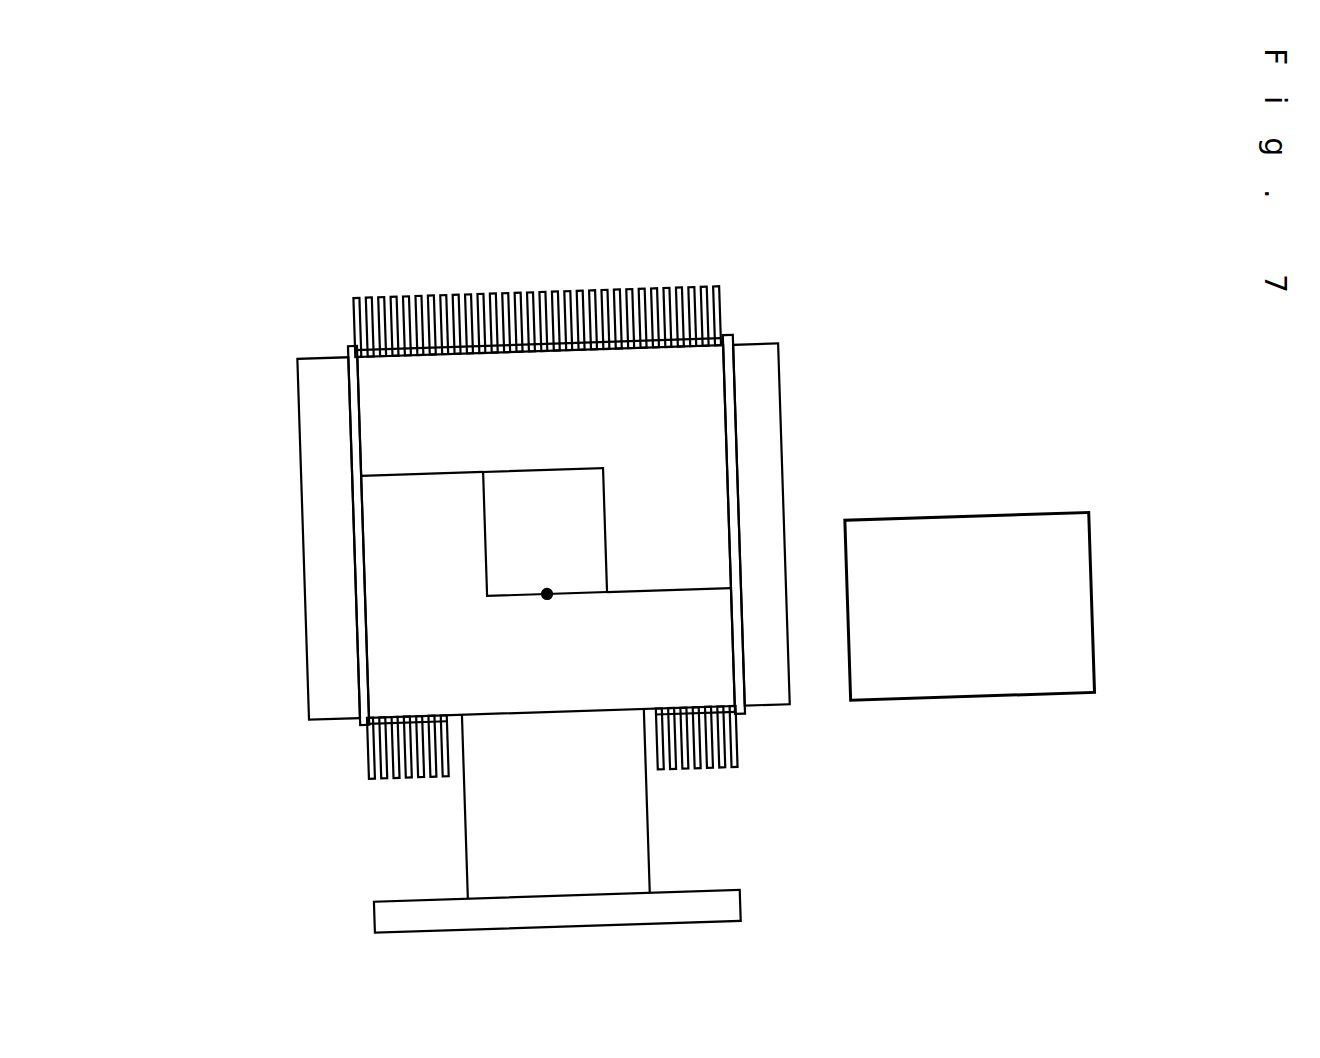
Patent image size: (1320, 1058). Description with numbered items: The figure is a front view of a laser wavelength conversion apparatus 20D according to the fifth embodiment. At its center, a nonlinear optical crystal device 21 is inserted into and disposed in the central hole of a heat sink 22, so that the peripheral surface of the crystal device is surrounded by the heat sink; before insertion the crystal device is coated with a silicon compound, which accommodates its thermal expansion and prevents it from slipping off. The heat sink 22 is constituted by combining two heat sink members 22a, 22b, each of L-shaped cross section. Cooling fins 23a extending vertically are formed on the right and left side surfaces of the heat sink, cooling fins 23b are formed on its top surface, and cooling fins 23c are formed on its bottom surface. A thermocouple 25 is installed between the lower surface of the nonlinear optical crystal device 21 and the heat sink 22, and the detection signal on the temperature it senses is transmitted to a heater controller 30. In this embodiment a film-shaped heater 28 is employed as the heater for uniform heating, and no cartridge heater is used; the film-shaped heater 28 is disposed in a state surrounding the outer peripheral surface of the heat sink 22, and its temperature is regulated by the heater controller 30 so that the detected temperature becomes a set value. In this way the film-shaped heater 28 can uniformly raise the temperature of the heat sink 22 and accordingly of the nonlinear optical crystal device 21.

The laser wavelength conversion apparatus 20D is at (615, 246).
The nonlinear optical crystal device 21 is at (567, 507).
The heat sink 22 is at (672, 373).
The heat sink member 22a is at (705, 417).
The heat sink member 22b is at (402, 612).
The cooling fins 23a is at (335, 473).
The cooling fins 23b is at (727, 296).
The cooling fins 23c is at (675, 772).
The thermocouple 25 is at (547, 592).
The film-shaped heater 28 is at (348, 389).
The heater controller 30 is at (1094, 617).